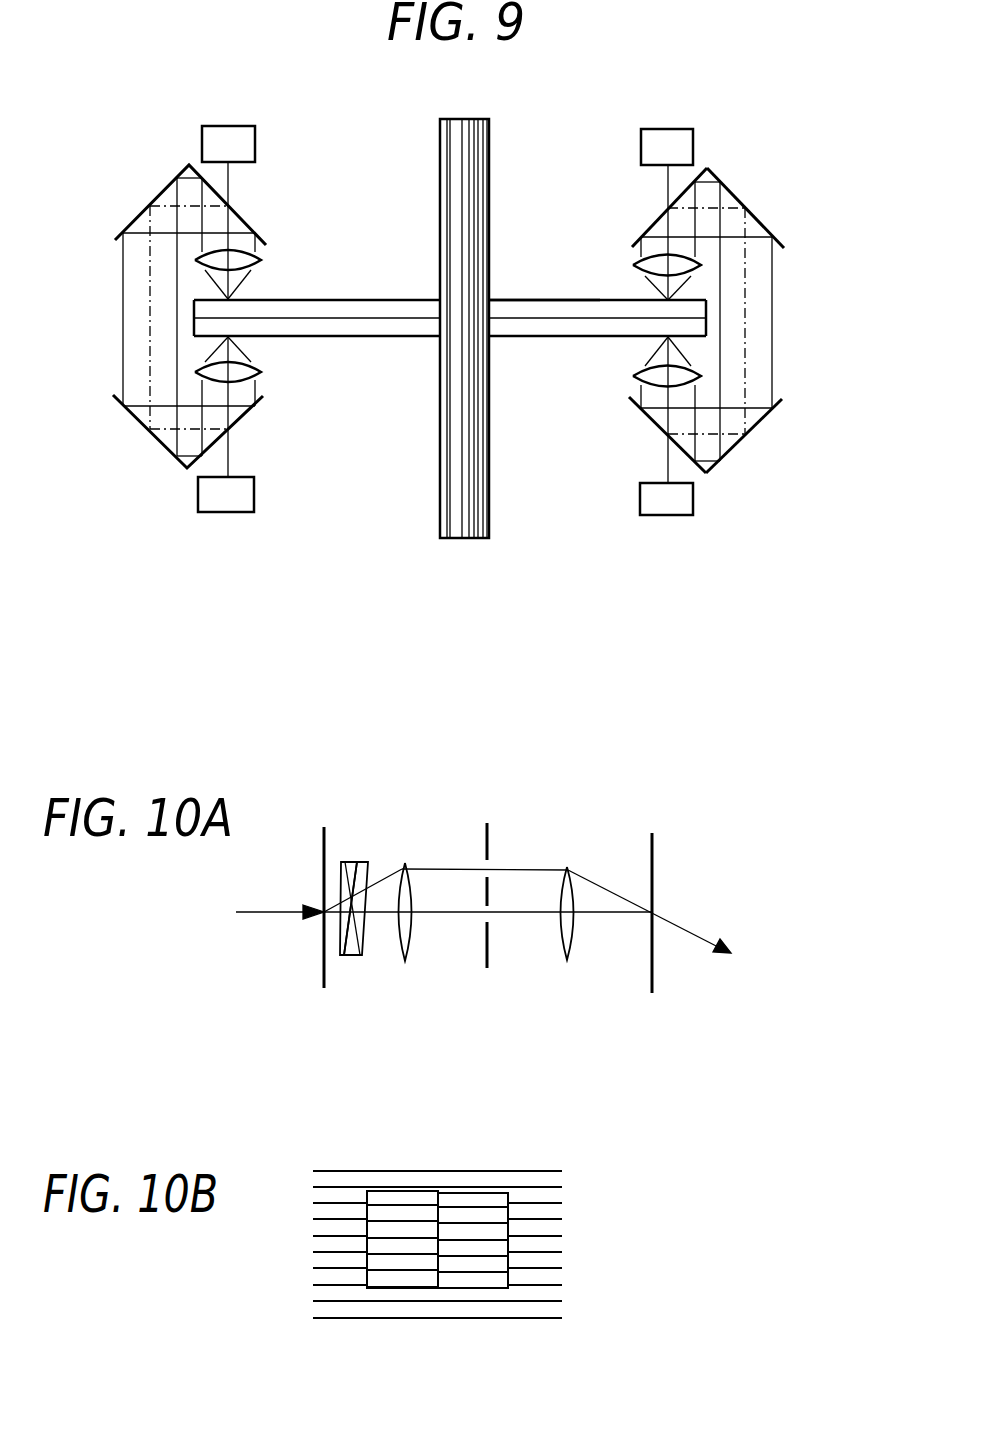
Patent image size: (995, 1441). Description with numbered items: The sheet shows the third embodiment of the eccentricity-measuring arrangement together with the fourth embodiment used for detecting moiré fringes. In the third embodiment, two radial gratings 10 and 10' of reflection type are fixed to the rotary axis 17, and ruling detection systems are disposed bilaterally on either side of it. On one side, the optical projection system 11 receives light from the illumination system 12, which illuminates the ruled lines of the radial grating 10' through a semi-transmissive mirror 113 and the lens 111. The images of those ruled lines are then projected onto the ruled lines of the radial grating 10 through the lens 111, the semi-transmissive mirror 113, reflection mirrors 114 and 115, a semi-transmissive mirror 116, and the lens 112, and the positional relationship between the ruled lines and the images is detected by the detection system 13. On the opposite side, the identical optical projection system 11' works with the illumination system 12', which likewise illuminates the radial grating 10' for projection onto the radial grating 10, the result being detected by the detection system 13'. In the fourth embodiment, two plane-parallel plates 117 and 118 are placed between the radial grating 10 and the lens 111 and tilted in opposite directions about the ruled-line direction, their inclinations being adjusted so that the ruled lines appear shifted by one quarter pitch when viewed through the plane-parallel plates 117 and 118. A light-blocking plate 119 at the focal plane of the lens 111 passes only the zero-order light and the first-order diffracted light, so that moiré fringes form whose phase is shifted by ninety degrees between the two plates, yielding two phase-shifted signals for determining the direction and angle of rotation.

In FIG. 9, the radial grating 10 is at (450, 358).
In FIG. 10A, the radial grating 10 is at (304, 871).
In FIG. 9, the radial grating 10' is at (544, 270).
In FIG. 10A, the radial grating 10' is at (679, 882).
In FIG. 9, the optical projection system 11 is at (742, 324).
In FIG. 9, the optical projection system 11' is at (157, 319).
In FIG. 9, the illumination system 12 is at (702, 124).
In FIG. 9, the illumination system 12' is at (200, 124).
In FIG. 9, the detection system 13 is at (700, 505).
In FIG. 9, the detection system 13' is at (185, 498).
In FIG. 9, the rotary axis 17 is at (479, 190).
In FIG. 9, the lens 111 is at (634, 265).
In FIG. 10A, the lens 111 is at (408, 962).
In FIG. 9, the lens 112 is at (635, 376).
In FIG. 10A, the lens 112 is at (568, 867).
In FIG. 9, the semi-transmissive mirror 113 is at (652, 226).
In FIG. 9, the reflection mirror 114 is at (762, 229).
In FIG. 9, the reflection mirror 115 is at (752, 425).
In FIG. 9, the semi-transmissive mirror 116 is at (655, 425).
In FIG. 10A, the plane-parallel plate 117 is at (346, 860).
In FIG. 10B, the plane-parallel plate 117 is at (380, 1190).
In FIG. 10A, the plane-parallel plate 118 is at (364, 862).
In FIG. 10B, the plane-parallel plate 118 is at (489, 1191).
In FIG. 10A, the light-blocking plate 119 is at (487, 953).